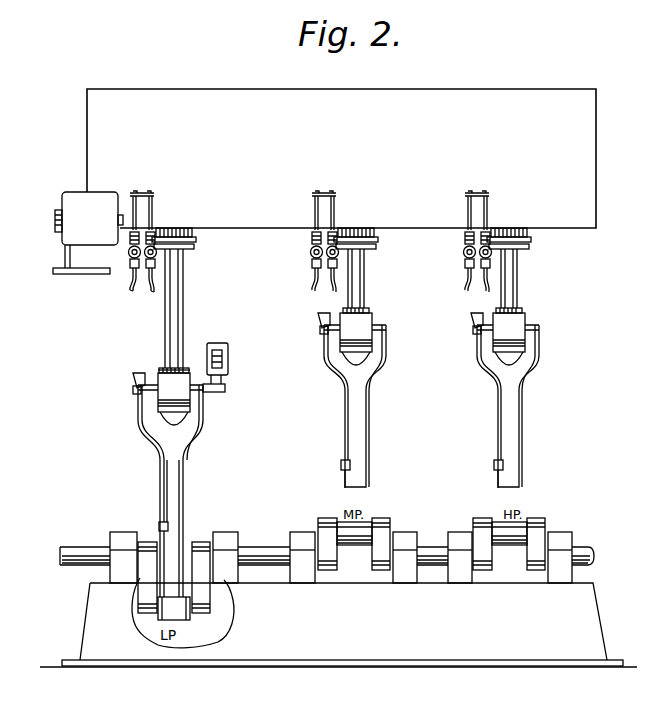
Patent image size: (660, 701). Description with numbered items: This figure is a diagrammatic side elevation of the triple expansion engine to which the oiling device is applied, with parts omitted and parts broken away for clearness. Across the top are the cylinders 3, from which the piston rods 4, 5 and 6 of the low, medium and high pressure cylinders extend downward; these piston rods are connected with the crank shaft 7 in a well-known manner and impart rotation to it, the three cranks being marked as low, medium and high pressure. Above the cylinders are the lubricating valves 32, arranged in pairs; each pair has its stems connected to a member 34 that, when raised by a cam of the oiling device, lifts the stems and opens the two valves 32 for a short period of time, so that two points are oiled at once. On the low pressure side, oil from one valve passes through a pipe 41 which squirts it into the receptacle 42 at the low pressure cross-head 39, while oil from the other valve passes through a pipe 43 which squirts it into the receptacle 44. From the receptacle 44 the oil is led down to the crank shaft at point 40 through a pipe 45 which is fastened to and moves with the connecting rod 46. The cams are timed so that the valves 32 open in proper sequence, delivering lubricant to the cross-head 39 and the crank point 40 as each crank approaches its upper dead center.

The cylinders 3 is at (572, 171).
The member 34 is at (136, 191).
The lubricating valve 32 is at (128, 253).
The pipe 43 is at (129, 284).
The pipe 41 is at (152, 292).
The piston rod 4 is at (183, 306).
The piston rod 5 is at (362, 291).
The piston rod 6 is at (512, 289).
The receptacle 42 is at (151, 369).
The receptacle 44 is at (140, 384).
The low pressure cross-head 39 is at (178, 398).
The connecting rod 46 is at (175, 475).
The pipe 45 is at (163, 484).
The crank shaft 7 is at (86, 544).
The point on crank shaft 40 is at (165, 591).